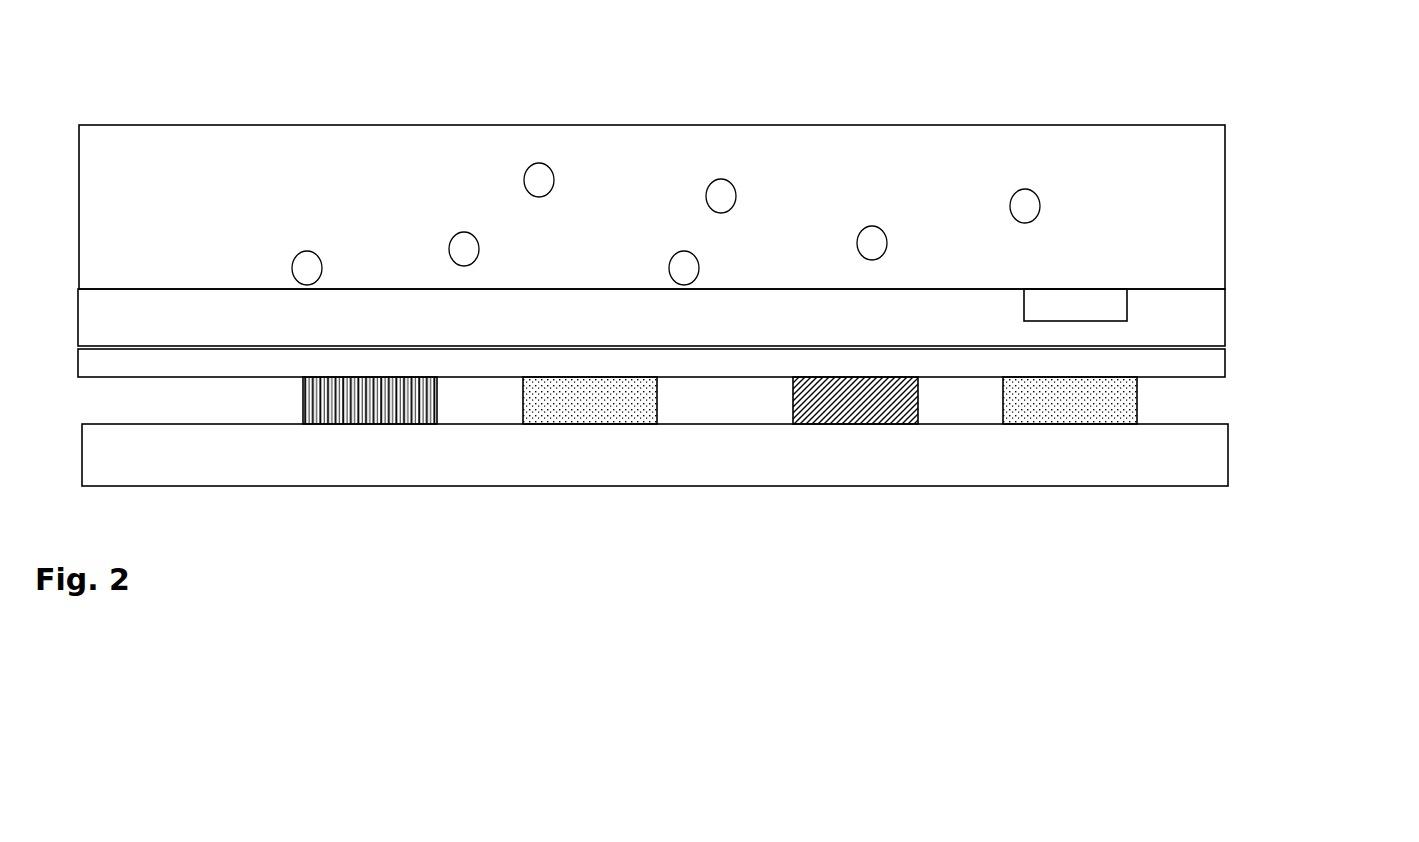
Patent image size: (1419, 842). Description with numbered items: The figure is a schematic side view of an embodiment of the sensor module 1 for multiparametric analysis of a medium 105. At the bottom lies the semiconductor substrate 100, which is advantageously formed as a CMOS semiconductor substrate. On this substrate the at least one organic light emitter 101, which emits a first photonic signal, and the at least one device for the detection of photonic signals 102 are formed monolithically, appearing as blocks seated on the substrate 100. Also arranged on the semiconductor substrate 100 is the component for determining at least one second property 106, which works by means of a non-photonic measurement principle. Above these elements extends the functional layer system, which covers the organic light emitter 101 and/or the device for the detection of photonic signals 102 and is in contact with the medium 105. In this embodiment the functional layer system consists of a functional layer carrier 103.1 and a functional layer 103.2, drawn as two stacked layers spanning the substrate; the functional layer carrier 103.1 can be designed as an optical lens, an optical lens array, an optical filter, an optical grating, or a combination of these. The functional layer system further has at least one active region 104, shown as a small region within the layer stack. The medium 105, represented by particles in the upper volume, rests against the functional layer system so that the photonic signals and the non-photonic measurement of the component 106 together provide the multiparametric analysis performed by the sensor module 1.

The sensor module 1 is at (247, 78).
The semiconductor substrate 100 is at (1140, 468).
The organic light emitter 101 is at (1113, 403).
The device for the detection of photonic signals 102 is at (910, 424).
The functional layer carrier 103.1 is at (1200, 316).
The functional layer 103.2 is at (1193, 362).
The active region 104 is at (1080, 300).
The medium 105 is at (743, 170).
The component for determining at least one second property 106 is at (362, 426).